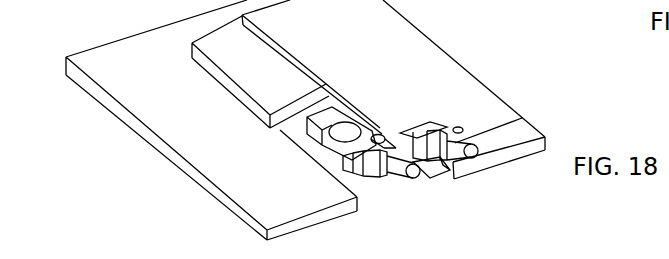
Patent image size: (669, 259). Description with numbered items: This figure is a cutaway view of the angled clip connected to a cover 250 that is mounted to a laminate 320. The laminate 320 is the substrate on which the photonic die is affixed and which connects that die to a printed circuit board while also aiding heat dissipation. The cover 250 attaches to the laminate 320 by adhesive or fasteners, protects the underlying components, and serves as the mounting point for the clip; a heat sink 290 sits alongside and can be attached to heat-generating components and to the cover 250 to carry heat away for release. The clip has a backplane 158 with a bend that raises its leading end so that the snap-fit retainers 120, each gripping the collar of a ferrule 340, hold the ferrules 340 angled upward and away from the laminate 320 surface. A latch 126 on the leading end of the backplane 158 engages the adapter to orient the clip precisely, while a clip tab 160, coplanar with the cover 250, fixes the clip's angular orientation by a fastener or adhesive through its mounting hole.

The laminate 320 is at (280, 182).
The heat sink 290 is at (273, 72).
The cover 250 is at (362, 30).
The backplane 158 is at (348, 130).
The clip tab 160 is at (378, 136).
The snap-fit retainer 120 is at (360, 172).
The latch 126 is at (437, 176).
The ferrule 340 is at (458, 143).